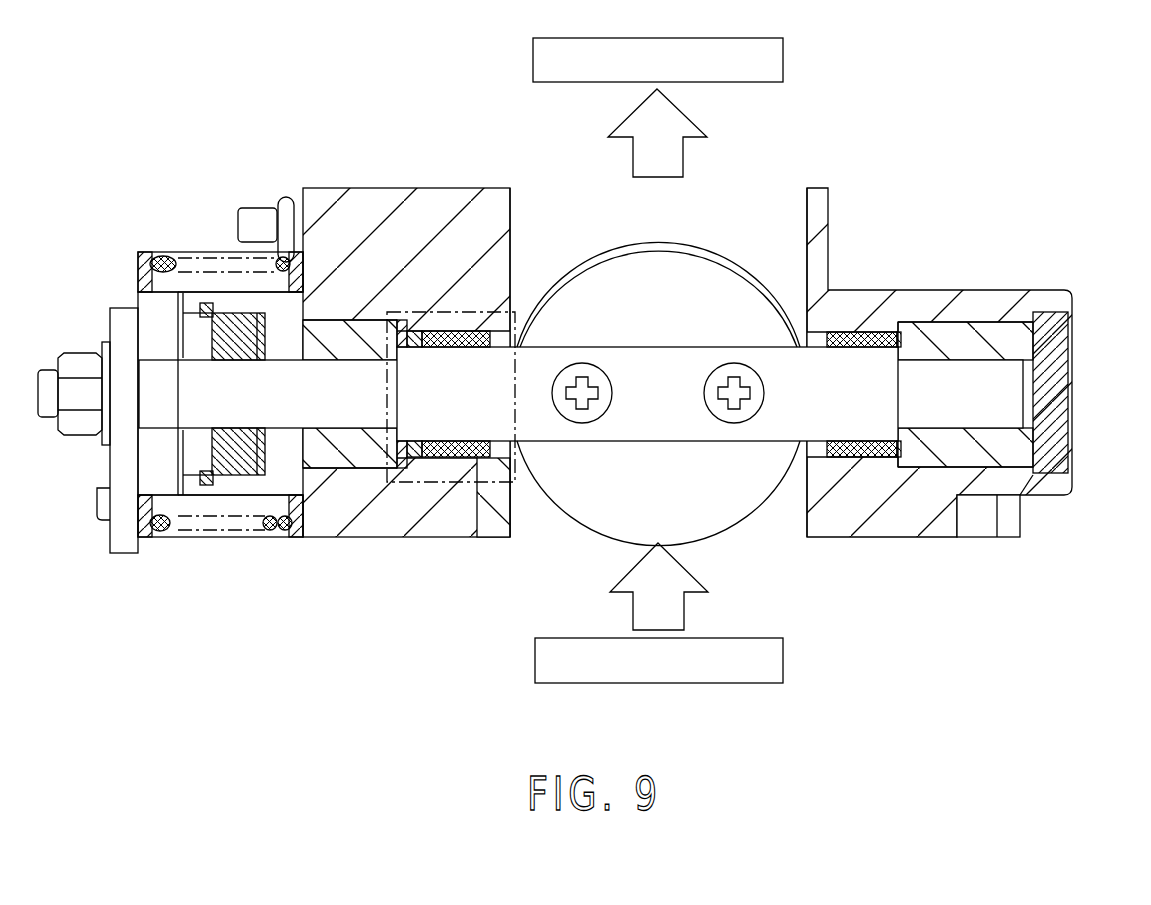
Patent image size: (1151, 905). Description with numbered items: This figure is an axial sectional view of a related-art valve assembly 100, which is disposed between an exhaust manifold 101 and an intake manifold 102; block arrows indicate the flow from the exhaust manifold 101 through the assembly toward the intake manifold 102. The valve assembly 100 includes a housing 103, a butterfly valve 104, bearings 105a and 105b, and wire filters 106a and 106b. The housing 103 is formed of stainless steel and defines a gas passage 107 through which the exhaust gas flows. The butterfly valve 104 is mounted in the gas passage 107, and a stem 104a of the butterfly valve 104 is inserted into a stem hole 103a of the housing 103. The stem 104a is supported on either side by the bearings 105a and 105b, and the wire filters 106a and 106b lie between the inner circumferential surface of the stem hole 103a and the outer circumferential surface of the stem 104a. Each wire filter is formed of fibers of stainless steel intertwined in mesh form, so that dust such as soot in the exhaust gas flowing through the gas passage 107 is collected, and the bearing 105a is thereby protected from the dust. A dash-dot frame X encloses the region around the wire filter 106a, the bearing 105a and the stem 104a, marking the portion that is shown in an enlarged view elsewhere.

The valve assembly 100 is at (578, 357).
The exhaust manifold 101 is at (535, 660).
The intake manifold 102 is at (783, 60).
The housing 103 is at (892, 525).
The stem hole 103a is at (512, 347).
The butterfly valve 104 is at (703, 498).
The stem 104a is at (553, 422).
The bearing 105a is at (330, 340).
The bearing 105b is at (963, 340).
The wire filter 106a is at (450, 330).
The wire filter 106b is at (843, 331).
The gas passage 107 is at (633, 230).
The frame X is at (452, 482).